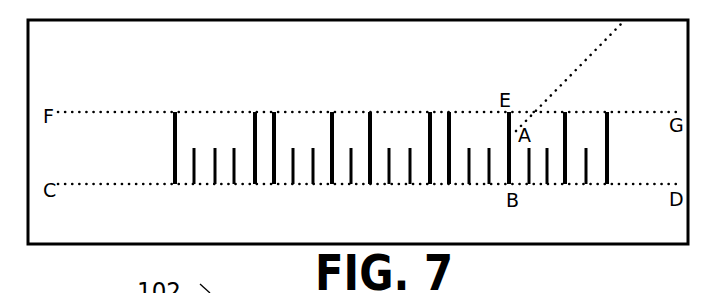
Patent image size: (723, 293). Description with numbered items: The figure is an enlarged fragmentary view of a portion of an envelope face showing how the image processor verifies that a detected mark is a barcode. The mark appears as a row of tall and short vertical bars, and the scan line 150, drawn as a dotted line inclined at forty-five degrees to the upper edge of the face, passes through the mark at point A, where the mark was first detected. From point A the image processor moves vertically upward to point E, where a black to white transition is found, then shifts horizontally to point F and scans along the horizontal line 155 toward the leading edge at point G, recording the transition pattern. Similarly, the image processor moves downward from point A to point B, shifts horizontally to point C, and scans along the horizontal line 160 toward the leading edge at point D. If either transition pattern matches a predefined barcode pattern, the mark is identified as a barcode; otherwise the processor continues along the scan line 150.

The horizontal line 155 is at (108, 112).
The horizontal line 160 is at (98, 183).
The scan line 150 is at (580, 63).